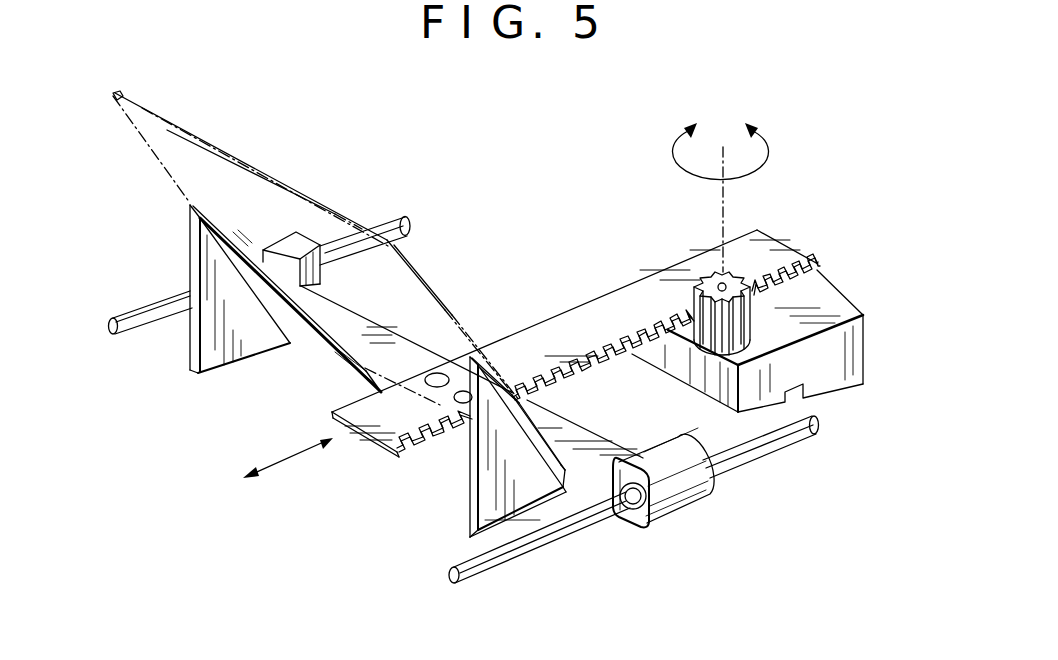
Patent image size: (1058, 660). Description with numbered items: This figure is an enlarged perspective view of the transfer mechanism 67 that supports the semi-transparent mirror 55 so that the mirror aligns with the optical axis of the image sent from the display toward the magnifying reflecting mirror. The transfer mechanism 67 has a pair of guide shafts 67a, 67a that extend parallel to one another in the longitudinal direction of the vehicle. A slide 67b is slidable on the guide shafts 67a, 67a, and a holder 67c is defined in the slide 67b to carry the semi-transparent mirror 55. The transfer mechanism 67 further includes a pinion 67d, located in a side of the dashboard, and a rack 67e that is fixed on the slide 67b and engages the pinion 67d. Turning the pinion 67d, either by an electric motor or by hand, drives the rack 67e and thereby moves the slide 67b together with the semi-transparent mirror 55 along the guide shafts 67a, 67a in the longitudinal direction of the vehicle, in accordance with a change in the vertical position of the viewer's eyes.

The semi-transparent mirror 55 is at (247, 165).
The transfer mechanism 67 is at (634, 190).
The guide shafts 67a is at (394, 220).
The slide 67b is at (402, 348).
The holder 67c is at (520, 474).
The pinion 67d is at (755, 312).
The rack 67e is at (601, 308).